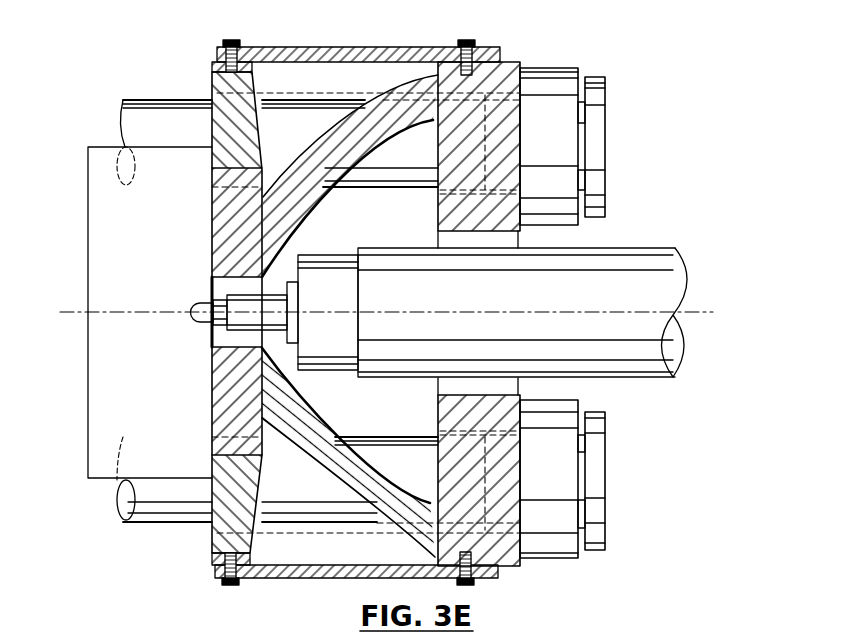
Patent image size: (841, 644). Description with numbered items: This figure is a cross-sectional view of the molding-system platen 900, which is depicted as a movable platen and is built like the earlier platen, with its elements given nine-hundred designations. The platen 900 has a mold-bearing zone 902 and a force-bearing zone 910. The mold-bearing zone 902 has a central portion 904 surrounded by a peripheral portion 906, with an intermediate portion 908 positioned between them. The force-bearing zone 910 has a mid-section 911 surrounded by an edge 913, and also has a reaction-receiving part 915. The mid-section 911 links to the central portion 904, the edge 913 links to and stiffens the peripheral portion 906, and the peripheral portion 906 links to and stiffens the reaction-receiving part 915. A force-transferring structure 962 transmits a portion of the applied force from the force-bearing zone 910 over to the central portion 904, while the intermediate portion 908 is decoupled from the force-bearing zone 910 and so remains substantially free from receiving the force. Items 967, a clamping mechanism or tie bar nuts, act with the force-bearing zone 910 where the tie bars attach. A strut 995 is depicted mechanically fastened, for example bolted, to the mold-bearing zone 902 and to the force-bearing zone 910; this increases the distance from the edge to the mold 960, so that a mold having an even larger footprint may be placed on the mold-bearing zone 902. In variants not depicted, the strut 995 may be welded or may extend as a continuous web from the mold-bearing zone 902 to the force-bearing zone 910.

The molding-system platen 900 is at (690, 98).
The mold-bearing zone 902 is at (210, 535).
The central portion 904 is at (233, 213).
The peripheral portion 906 is at (213, 62).
The intermediate portion 908 is at (233, 127).
The force-bearing zone 910 is at (520, 62).
The mid-section 911 is at (483, 232).
The edge 913 is at (500, 60).
The reaction-receiving part 915 is at (523, 187).
The mold 960 is at (88, 297).
The force-transferring structure 962 is at (352, 133).
The items (clamping mechanism or tie bar nuts) 967 is at (558, 135).
The strut 995 is at (253, 47).